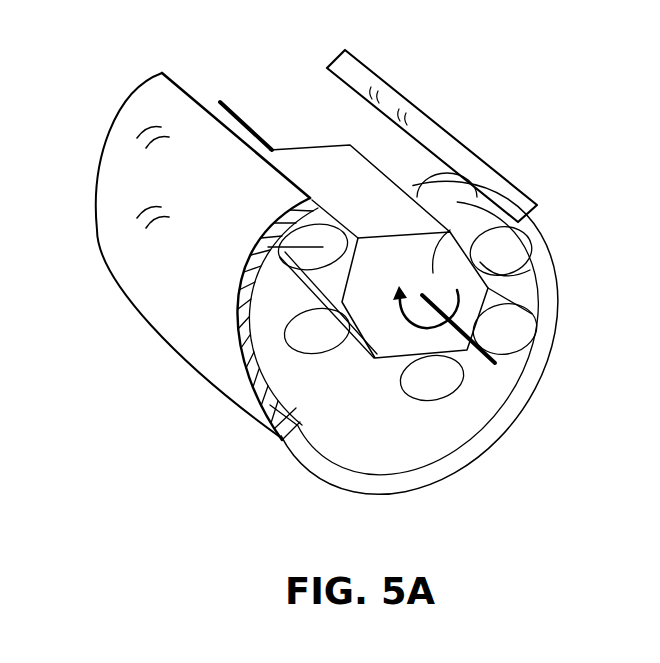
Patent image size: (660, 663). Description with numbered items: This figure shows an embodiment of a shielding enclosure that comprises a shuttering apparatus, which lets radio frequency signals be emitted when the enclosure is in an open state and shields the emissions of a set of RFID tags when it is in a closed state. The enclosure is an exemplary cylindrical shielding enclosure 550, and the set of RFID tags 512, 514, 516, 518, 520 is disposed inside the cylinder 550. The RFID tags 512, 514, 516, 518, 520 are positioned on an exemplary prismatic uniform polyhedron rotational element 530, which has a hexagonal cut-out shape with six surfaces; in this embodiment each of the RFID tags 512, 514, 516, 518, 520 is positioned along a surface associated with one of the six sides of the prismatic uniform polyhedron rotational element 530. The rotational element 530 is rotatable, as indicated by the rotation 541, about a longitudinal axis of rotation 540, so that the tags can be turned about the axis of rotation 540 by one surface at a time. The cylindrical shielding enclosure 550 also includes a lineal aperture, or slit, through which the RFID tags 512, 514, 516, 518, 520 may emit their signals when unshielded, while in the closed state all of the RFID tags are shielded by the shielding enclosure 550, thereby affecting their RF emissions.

The RFID tag 512 is at (508, 253).
The RFID tag 514 is at (510, 330).
The RFID tag 516 is at (432, 377).
The RFID tag 518 is at (315, 327).
The RFID tag 520 is at (243, 258).
The prismatic uniform polyhedron rotational element 530 is at (443, 225).
The longitudinal axis of rotation 540 is at (490, 352).
The rotation 541 is at (263, 142).
The cylindrical shielding enclosure 550 is at (360, 78).